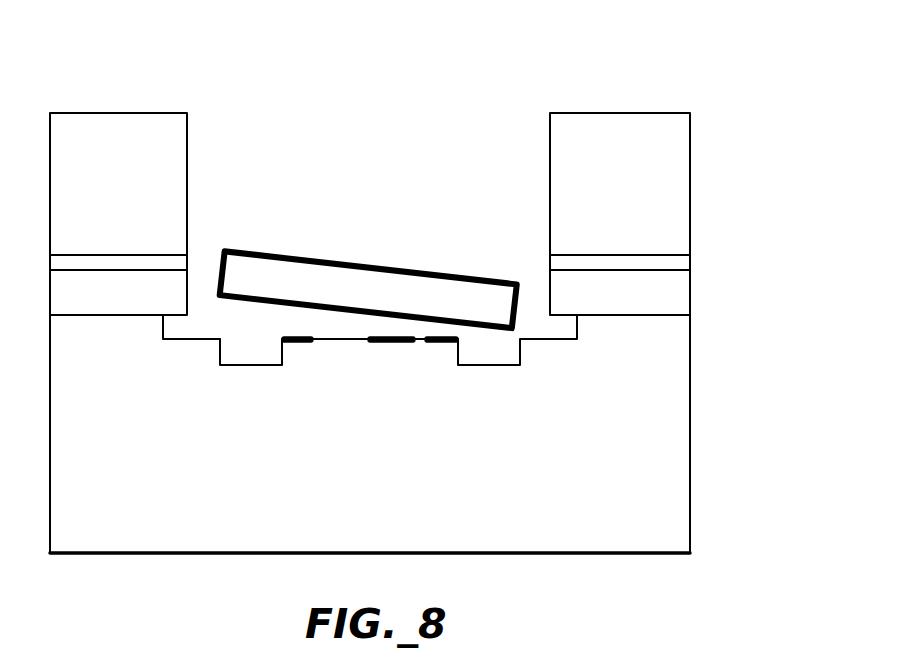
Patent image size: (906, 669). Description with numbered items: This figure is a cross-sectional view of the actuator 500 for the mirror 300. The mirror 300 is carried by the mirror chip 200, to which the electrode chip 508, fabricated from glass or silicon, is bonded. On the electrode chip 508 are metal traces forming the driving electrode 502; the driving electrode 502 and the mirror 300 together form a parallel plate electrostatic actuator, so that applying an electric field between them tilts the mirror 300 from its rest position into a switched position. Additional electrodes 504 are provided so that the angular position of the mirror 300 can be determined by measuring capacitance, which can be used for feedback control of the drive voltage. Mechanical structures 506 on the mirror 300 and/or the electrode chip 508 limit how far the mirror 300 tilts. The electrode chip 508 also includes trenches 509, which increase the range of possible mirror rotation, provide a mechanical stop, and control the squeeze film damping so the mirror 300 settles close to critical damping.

The actuator 500 is at (598, 46).
The mirror chip 200 is at (720, 113).
The mirror 300 is at (323, 262).
The driving electrode 502 is at (389, 338).
The electrodes for measuring 504 is at (297, 338).
The mechanical structures 506 is at (443, 338).
The electrode chip 508 is at (682, 493).
The trenches 509 is at (238, 353).